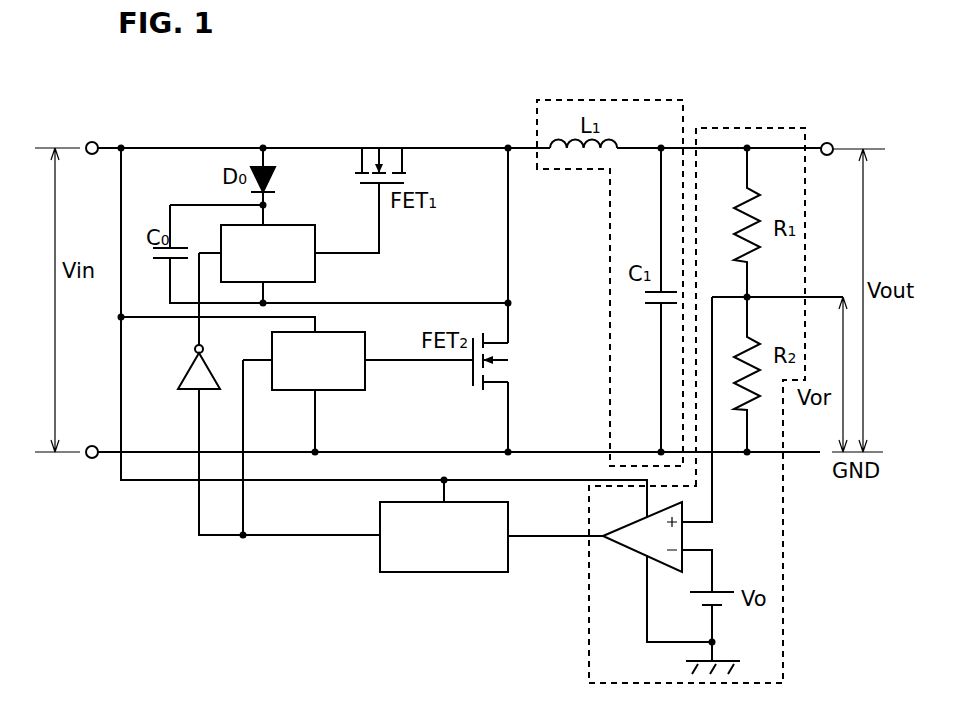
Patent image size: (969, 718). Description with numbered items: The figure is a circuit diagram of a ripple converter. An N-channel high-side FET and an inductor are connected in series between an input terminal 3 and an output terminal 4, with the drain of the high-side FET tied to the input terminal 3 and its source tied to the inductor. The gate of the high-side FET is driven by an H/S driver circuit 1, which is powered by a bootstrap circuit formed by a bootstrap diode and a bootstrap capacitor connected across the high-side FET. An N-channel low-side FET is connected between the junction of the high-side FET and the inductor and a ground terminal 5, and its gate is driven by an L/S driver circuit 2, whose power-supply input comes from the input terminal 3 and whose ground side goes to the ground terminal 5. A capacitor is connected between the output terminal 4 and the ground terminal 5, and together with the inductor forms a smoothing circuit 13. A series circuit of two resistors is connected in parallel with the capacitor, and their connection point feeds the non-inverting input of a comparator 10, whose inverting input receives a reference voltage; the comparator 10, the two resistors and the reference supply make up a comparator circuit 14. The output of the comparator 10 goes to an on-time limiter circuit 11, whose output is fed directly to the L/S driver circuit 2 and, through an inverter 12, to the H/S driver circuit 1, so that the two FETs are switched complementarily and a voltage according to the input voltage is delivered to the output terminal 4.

The H/S driver circuit 1 is at (315, 268).
The L/S driver circuit 2 is at (282, 390).
The input terminal 3 is at (97, 142).
The output terminal 4 is at (831, 143).
The ground terminal 5 is at (88, 458).
The comparator 10 is at (634, 553).
The on-time limiter circuit 11 is at (490, 572).
The inverter 12 is at (186, 389).
The smoothing circuit 13 is at (668, 100).
The comparator circuit 14 is at (760, 128).